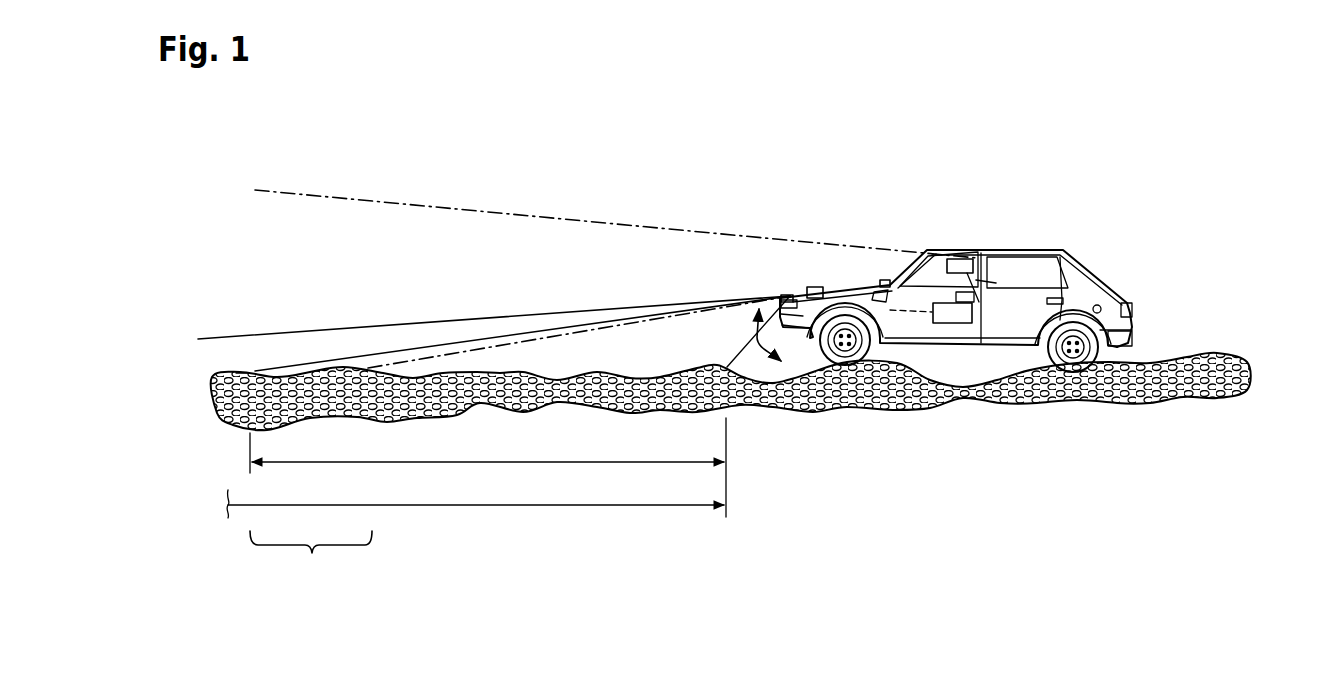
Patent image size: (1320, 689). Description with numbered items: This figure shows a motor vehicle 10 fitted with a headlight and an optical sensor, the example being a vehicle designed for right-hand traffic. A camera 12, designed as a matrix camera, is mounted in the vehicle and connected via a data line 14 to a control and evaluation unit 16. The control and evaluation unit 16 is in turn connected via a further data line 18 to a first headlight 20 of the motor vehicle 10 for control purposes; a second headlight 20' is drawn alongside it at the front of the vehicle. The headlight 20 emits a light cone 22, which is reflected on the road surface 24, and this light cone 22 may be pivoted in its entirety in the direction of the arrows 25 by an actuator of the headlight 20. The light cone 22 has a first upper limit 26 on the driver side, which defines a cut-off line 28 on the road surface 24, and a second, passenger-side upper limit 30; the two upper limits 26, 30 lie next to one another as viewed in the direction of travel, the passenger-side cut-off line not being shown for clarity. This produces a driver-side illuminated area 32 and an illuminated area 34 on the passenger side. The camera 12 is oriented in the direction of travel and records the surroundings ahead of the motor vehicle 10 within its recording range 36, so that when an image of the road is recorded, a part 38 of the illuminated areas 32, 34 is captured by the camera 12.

The motor vehicle 10 is at (1132, 315).
The camera 12 is at (961, 258).
The data line 14 is at (982, 283).
The control and evaluation unit 16 is at (942, 325).
The data line 18 is at (885, 280).
The first headlight 20 is at (757, 277).
The second sensor 20' is at (813, 243).
The light cone 22 is at (748, 350).
The road surface 24 is at (325, 368).
The arrows 25 is at (753, 318).
The first upper limit 26 is at (441, 342).
The cut-off line 28 is at (242, 368).
The second upper limit 30 is at (362, 326).
The driver-side illuminated area 32 is at (541, 462).
The illuminated area 34 is at (497, 505).
The recording range 36 is at (540, 216).
The part 38 is at (311, 559).